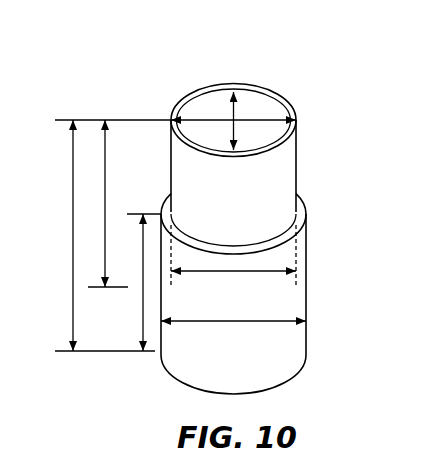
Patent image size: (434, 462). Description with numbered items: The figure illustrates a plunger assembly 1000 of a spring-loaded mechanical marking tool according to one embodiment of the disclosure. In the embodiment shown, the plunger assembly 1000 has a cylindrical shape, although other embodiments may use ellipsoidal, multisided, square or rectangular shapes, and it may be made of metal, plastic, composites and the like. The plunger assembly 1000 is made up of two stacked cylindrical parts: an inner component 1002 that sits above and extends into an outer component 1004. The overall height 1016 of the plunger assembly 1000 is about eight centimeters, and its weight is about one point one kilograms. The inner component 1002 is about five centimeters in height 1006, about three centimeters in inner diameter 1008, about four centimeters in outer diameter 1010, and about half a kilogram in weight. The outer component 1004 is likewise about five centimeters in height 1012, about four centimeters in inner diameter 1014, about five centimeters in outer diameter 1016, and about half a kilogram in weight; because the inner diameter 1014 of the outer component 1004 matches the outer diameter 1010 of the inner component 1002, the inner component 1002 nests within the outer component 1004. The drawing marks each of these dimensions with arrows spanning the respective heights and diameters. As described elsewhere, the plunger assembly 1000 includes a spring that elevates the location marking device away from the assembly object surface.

The plunger assembly 1000 is at (130, 42).
The inner component 1002 is at (297, 168).
The outer component 1004 is at (307, 252).
The height 1006 is at (103, 258).
The inner diameter 1008 is at (230, 110).
The outer diameter 1010 is at (255, 118).
The height 1012 is at (143, 318).
The inner diameter 1014 is at (247, 272).
The height / outer diameter 1016 is at (70, 160).